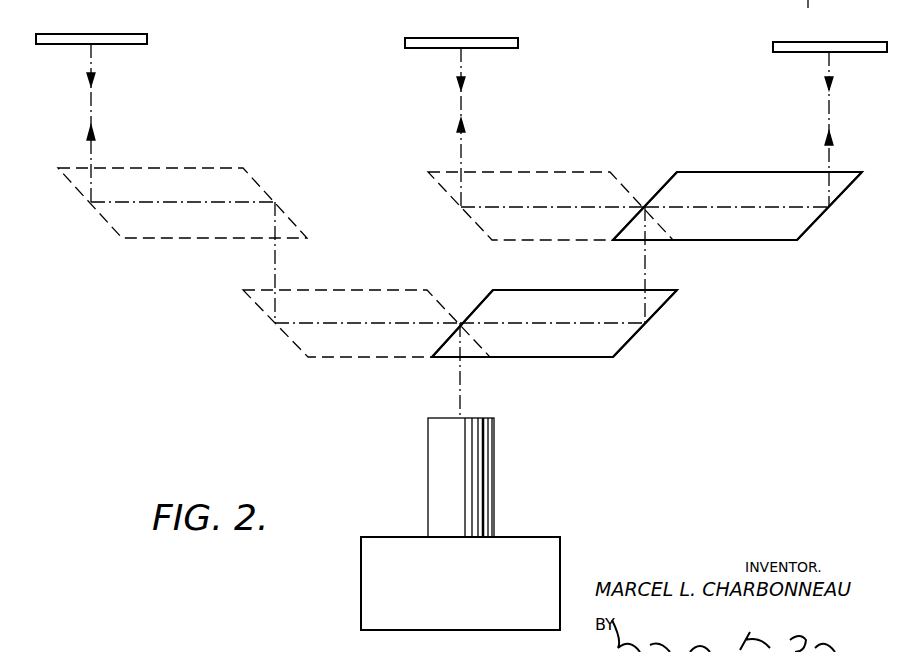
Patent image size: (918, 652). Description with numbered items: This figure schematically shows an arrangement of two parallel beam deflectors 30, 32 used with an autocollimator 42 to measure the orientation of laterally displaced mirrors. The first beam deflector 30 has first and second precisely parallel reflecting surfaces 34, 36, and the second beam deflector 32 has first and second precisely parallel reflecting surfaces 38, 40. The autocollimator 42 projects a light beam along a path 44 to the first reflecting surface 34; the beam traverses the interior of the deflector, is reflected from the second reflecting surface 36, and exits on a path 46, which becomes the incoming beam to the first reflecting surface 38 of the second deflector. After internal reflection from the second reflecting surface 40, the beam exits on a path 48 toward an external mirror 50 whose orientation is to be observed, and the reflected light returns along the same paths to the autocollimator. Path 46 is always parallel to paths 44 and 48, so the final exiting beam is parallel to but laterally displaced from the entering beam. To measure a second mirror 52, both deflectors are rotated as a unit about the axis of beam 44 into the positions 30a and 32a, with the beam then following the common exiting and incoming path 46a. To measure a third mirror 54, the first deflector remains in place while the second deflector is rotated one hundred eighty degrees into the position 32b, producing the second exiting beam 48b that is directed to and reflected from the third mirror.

The first parallel beam deflector 30 is at (565, 358).
The rotated position of first beam deflector 30a is at (383, 360).
The second parallel beam deflector 32 is at (740, 172).
The rotated position of second beam deflector 32a is at (165, 168).
The second rotated position of second beam deflector 32b is at (565, 158).
The first reflecting surface 34 is at (477, 306).
The second reflecting surface 36 is at (660, 310).
The first reflecting surface 38 is at (656, 194).
The second reflecting surface 40 is at (840, 196).
The autocollimator 42 is at (527, 537).
The autocollimator beam path 44 is at (462, 402).
The first exiting beam path 46 is at (648, 265).
The common exiting and incoming path in rotated position 46a is at (276, 275).
The second exiting beam path 48 is at (92, 110).
The second exiting beam in position 32b 48b is at (462, 108).
The external mirror 50 is at (830, 42).
The second mirror 52 is at (110, 34).
The third mirror 54 is at (456, 38).